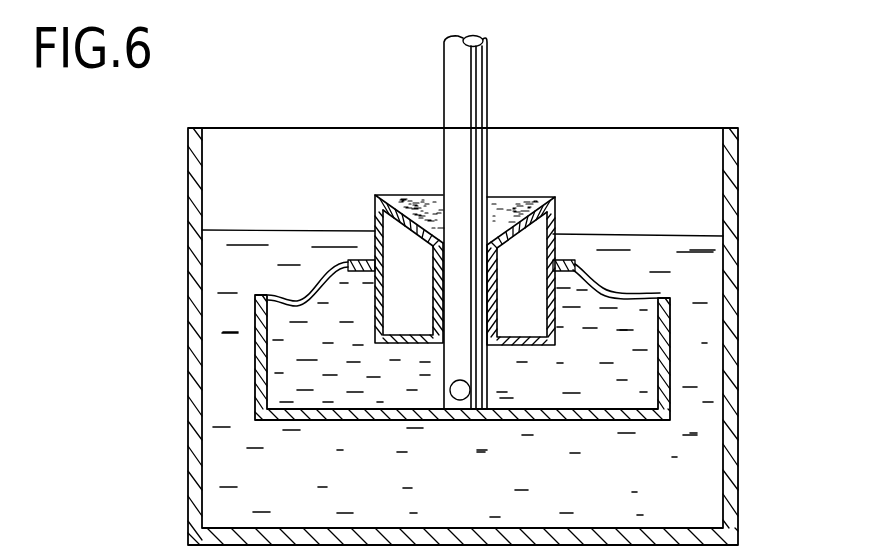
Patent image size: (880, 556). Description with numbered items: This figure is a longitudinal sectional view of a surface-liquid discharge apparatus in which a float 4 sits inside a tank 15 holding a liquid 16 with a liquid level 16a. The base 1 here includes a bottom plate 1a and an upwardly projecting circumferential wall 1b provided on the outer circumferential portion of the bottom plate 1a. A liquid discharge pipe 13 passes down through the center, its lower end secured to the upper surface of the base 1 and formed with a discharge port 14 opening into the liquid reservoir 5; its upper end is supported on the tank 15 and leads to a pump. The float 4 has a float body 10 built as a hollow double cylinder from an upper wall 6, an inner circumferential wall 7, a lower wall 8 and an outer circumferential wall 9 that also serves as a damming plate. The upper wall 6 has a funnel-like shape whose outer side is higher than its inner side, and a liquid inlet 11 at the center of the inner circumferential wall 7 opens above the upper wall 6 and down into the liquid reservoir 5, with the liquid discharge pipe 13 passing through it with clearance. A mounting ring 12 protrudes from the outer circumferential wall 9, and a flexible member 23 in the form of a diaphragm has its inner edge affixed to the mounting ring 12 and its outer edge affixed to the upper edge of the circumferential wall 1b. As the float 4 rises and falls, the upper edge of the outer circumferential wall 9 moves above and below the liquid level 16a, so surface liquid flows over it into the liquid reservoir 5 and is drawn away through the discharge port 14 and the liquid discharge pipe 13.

The base 1 is at (313, 420).
The bottom plate 1a is at (644, 422).
The circumferential wall 1b is at (670, 392).
The float 4 is at (515, 190).
The liquid reservoir 5 is at (610, 395).
The upper wall 6 is at (420, 202).
The inner circumferential wall 7 is at (430, 273).
The lower wall 8 is at (408, 347).
The outer circumferential wall 9 is at (373, 308).
The float body 10 is at (372, 219).
The liquid inlet 11 is at (489, 345).
The mounting ring 12 is at (563, 267).
The liquid discharge pipe 13 is at (487, 66).
The discharge port 14 is at (465, 398).
The tank 15 is at (739, 340).
The liquid 16 is at (700, 285).
The liquid level 16a is at (700, 236).
The flexible member 23 is at (608, 287).